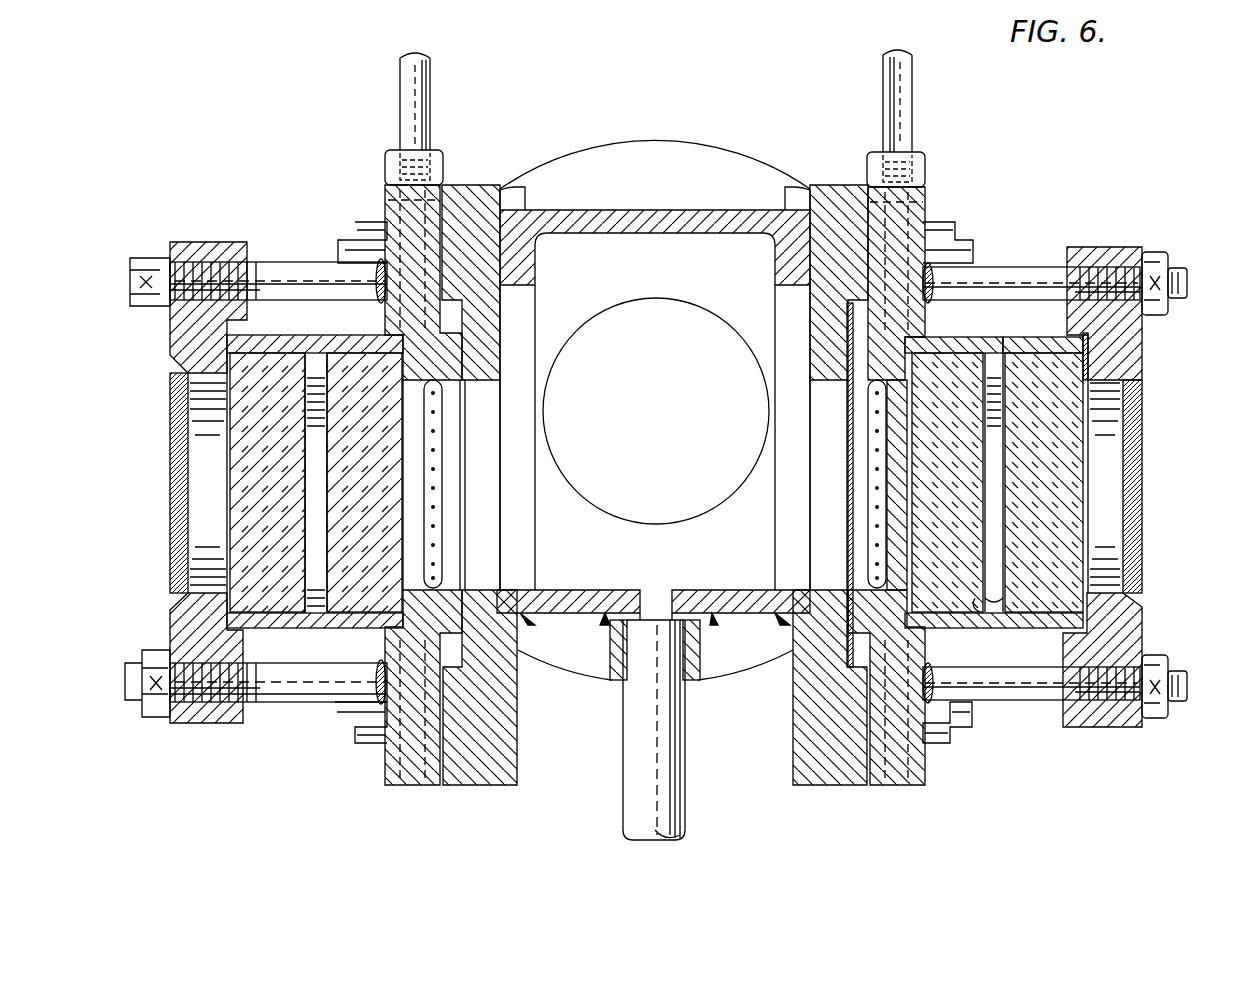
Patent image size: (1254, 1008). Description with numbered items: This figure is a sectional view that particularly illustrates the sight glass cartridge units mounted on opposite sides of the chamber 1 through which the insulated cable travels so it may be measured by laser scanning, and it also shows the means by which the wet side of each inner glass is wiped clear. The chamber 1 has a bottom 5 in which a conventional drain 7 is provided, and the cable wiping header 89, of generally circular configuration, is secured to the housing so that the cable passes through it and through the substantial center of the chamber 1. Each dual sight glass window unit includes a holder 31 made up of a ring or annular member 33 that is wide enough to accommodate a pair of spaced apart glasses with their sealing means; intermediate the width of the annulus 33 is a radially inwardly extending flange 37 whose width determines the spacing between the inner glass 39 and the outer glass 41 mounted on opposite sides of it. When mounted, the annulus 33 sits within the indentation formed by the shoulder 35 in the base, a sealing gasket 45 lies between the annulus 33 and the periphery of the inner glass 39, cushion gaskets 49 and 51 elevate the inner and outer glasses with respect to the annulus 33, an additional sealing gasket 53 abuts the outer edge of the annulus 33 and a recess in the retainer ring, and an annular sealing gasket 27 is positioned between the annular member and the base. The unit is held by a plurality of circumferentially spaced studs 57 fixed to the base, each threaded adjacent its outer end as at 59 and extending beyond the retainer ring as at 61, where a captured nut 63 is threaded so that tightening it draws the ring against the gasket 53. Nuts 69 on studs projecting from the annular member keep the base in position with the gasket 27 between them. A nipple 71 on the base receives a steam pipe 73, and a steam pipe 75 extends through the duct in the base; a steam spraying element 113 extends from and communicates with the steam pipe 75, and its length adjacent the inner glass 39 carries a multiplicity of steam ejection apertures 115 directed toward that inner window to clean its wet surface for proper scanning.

The chamber 1 is at (680, 198).
The bottom 5 is at (760, 590).
The drain 7 is at (668, 740).
The annular sealing gasket 27 is at (846, 327).
The holder 31 is at (998, 358).
The ring or annular member 33 is at (960, 345).
The shoulder 35 is at (920, 343).
The radially inwardly extending flange 37 is at (1005, 345).
The inner glass 39 is at (350, 595).
The outer glass 41 is at (245, 508).
The sealing gasket 45 is at (867, 378).
The cushion gasket 49 is at (1008, 598).
The cushion gasket 51 is at (980, 605).
The additional sealing gasket 53 is at (1085, 378).
The studs 57 is at (1000, 690).
The threaded portion 59 is at (1106, 272).
The threaded stud end 61 is at (1188, 284).
The captured nut 63 is at (1152, 255).
The nuts 69 is at (938, 745).
The nipple 71 is at (912, 170).
The steam pipe 73 is at (912, 125).
The steam pipe 75 is at (895, 232).
The cable wiping header 89 is at (742, 147).
The steam spraying element 113 is at (878, 413).
The steam ejection apertures 115 is at (880, 503).